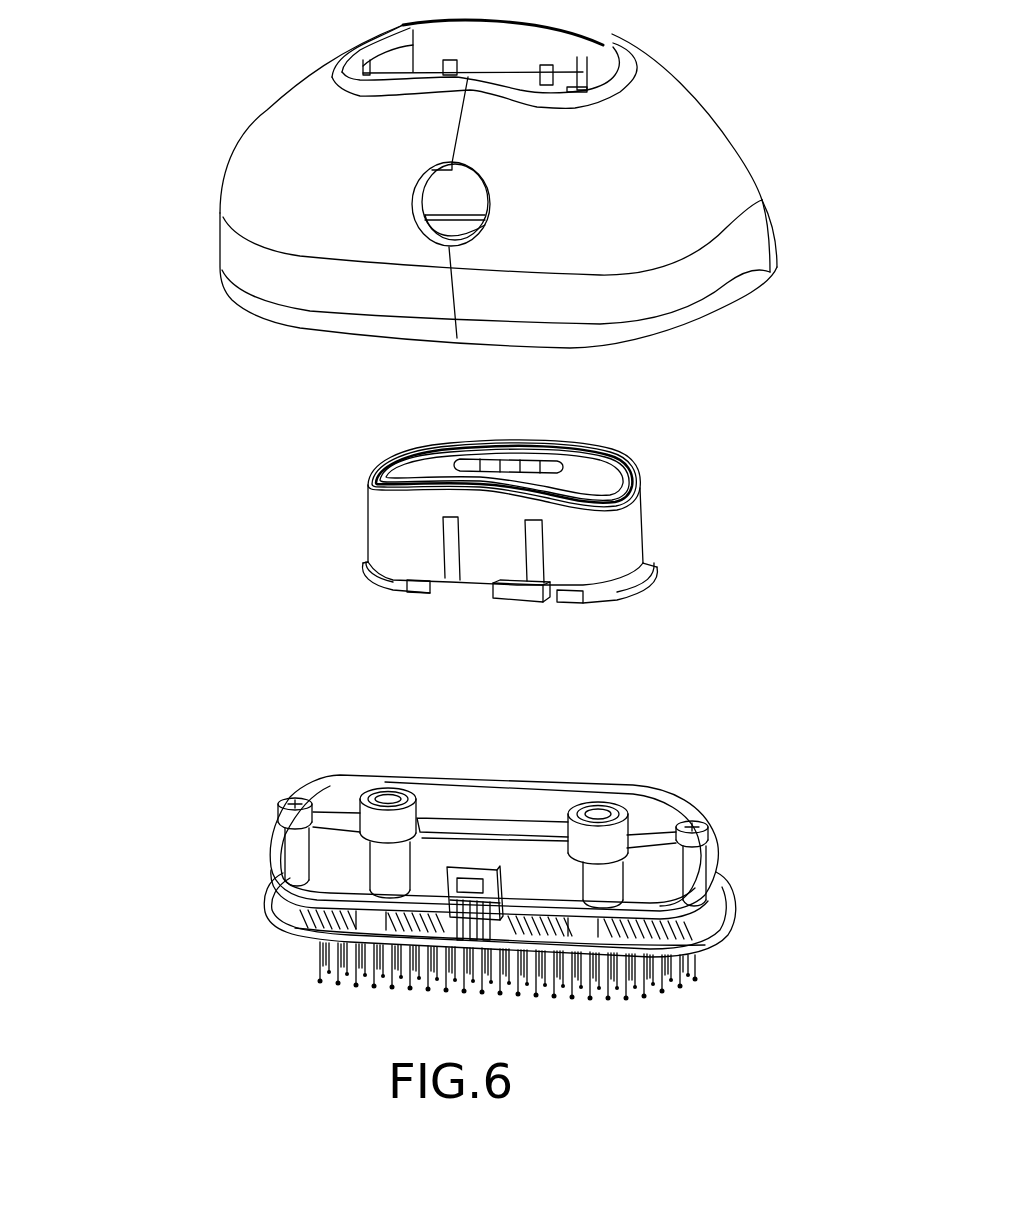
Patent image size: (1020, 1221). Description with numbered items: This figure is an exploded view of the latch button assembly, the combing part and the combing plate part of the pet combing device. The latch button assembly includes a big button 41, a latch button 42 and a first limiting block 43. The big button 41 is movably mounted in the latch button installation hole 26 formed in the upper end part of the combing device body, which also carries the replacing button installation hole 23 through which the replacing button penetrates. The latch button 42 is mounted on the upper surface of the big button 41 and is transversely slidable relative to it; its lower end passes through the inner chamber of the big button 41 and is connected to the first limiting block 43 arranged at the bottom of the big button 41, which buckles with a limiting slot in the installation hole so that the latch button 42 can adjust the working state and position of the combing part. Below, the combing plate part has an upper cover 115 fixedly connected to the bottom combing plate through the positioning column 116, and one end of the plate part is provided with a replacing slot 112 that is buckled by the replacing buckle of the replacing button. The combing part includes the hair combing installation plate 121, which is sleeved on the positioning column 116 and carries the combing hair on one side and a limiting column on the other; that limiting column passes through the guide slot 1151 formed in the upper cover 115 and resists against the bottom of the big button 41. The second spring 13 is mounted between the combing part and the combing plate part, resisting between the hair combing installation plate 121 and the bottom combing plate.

The second spring 13 is at (578, 936).
The replacing button installation hole 23 is at (253, 204).
The latch button installation hole 26 is at (335, 54).
The big button 41 is at (340, 544).
The latch button 42 is at (353, 475).
The first limiting block 43 is at (668, 513).
The replacing slot 112 is at (668, 821).
The upper cover 115 is at (559, 794).
The positioning column 116 is at (372, 852).
The hair combing installation plate 121 is at (375, 913).
The guide slot 1151 is at (395, 784).